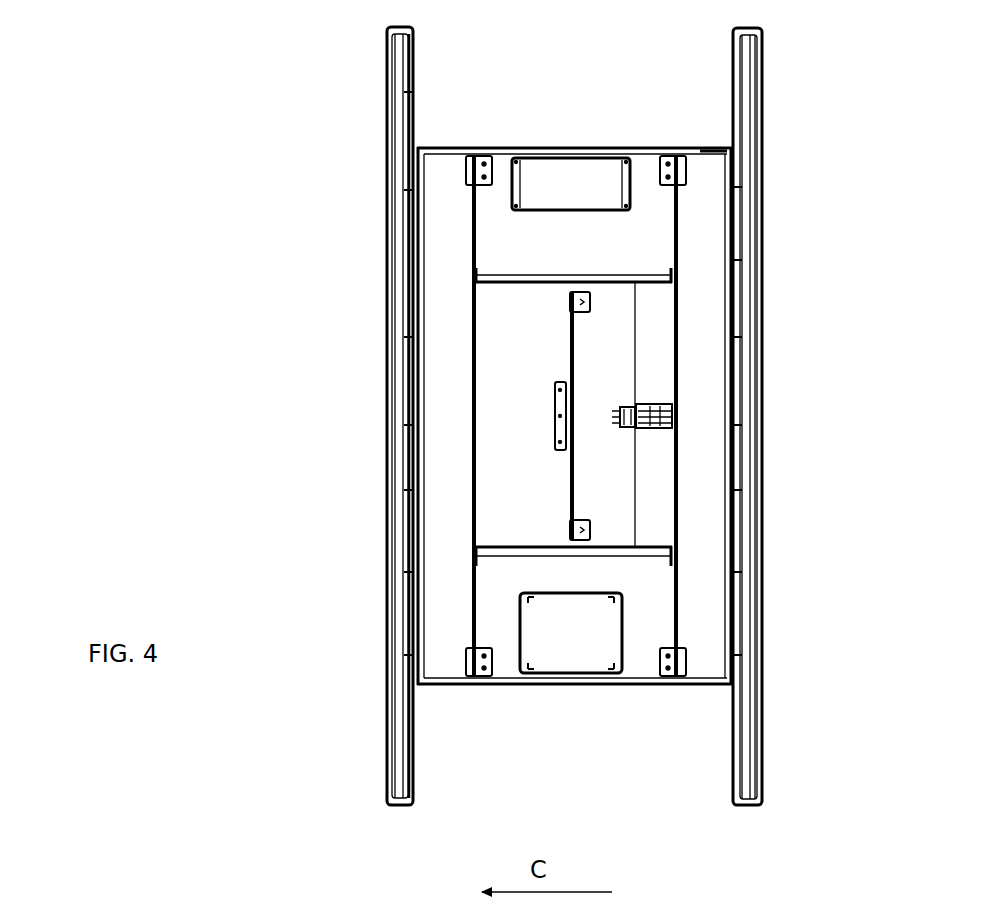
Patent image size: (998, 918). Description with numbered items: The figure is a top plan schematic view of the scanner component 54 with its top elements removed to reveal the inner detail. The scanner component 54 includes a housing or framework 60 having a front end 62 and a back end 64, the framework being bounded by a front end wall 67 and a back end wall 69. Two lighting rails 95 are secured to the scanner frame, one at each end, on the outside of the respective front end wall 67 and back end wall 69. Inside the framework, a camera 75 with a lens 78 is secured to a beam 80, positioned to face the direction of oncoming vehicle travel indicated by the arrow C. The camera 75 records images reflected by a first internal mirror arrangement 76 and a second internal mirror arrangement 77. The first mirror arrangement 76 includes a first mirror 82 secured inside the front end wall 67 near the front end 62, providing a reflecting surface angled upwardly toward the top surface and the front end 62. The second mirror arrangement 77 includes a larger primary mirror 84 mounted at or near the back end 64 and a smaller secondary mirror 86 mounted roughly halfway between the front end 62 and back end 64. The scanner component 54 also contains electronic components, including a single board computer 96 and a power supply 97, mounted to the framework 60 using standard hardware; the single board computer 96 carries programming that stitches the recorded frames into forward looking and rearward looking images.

The scanner component 54 is at (870, 383).
The housing or framework 60 is at (565, 683).
The front end 62 is at (425, 695).
The back end 64 is at (728, 695).
The front end wall 67 is at (413, 488).
The back end wall 69 is at (745, 532).
The camera 75 is at (658, 404).
The first internal mirror arrangement 76 is at (462, 368).
The second internal mirror arrangement 77 is at (692, 262).
The lens 78 is at (612, 405).
The beam 80 is at (646, 490).
The first mirror 82 is at (447, 346).
The primary mirror 84 is at (693, 345).
The secondary mirror 86 is at (567, 478).
The lighting rails 95 is at (413, 92).
The single board computer 96 is at (598, 622).
The power supply 97 is at (563, 188).